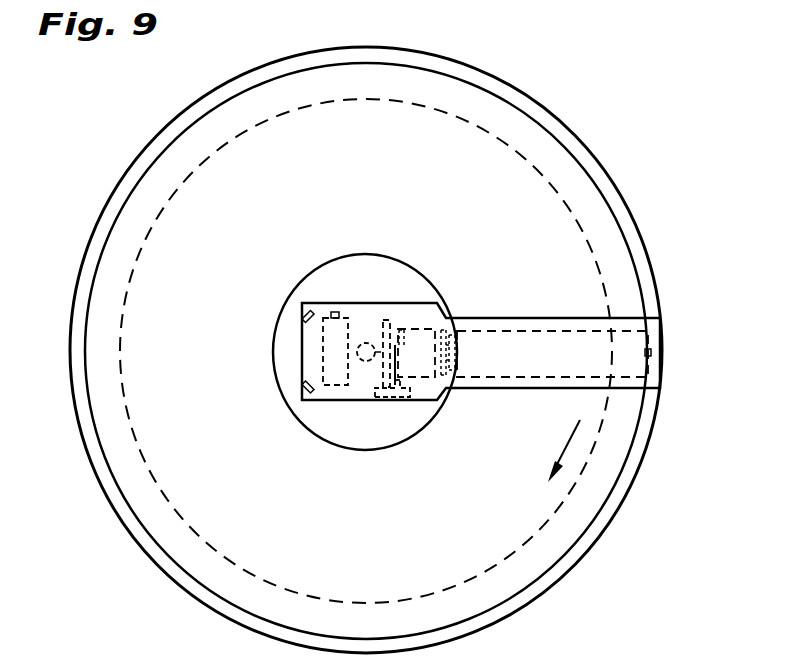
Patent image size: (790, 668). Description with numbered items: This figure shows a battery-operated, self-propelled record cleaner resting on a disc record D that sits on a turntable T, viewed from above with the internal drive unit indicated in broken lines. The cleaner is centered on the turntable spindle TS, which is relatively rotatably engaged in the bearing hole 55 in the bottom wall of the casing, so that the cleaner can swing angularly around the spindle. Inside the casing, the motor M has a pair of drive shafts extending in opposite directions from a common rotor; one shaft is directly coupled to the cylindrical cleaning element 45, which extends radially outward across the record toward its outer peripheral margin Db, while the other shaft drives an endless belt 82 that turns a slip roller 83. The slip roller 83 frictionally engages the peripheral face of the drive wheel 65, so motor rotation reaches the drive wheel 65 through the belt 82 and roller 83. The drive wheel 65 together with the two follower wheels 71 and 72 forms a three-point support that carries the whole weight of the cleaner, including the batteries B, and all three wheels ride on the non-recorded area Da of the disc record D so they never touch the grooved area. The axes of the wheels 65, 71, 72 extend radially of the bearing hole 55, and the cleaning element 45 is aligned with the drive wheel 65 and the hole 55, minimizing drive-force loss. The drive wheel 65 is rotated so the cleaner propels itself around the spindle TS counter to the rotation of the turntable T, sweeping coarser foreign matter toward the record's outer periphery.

The disc record D is at (183, 150).
The outer peripheral margin Db is at (613, 203).
The turntable T is at (513, 150).
The non-recorded area Da is at (327, 282).
The bearing hole 55 is at (370, 342).
The motor M is at (415, 345).
The cylindrical cleaning element 45 is at (548, 335).
The follower wheel 71 is at (300, 312).
The follower wheel 72 is at (300, 392).
The batteries B is at (322, 350).
The turntable spindle TS is at (368, 362).
The drive wheel 65 is at (368, 392).
The slip roller 83 is at (388, 395).
The endless belt 82 is at (405, 390).